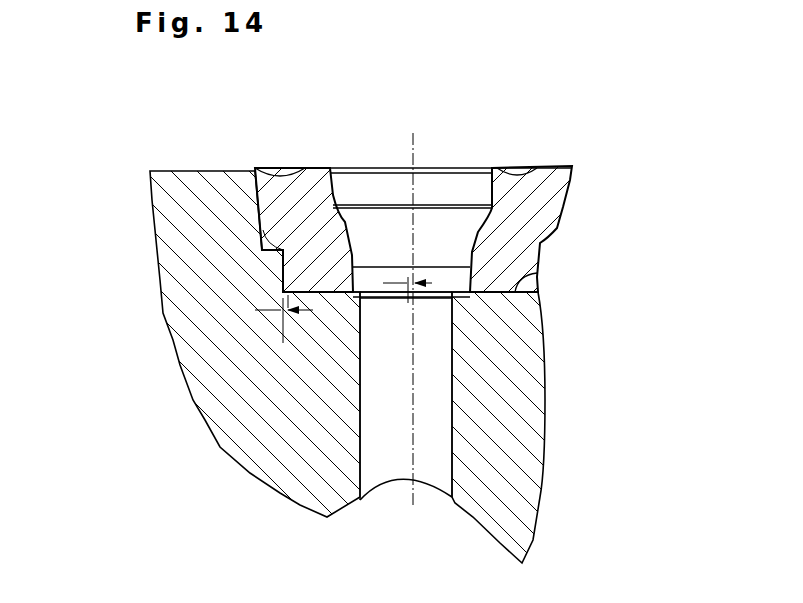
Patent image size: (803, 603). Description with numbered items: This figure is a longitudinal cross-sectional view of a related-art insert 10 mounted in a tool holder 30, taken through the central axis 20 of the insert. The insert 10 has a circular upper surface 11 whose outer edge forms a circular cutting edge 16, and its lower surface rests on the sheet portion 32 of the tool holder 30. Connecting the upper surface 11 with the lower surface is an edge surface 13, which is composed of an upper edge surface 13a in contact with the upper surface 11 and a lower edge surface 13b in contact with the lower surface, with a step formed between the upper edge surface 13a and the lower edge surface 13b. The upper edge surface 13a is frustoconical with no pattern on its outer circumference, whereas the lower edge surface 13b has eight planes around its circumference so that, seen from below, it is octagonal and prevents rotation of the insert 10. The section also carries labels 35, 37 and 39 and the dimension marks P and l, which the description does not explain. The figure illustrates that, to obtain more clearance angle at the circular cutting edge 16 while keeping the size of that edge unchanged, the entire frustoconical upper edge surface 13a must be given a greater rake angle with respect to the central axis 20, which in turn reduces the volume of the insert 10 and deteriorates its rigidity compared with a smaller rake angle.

The insert 10 is at (596, 176).
The upper surface 11 is at (498, 163).
The edge surface 13 is at (566, 237).
The upper edge surface 13a is at (562, 210).
The lower edge surface 13b is at (262, 247).
The circular cutting edge 16 is at (572, 167).
The central axis 20 is at (414, 144).
The tool holder 30 is at (566, 368).
The sheet portion 32 is at (537, 273).
The groove 35 is at (259, 197).
The outer wall surface 37 is at (285, 263).
The bore 39 is at (408, 361).
The offset dimension P is at (284, 328).
The length dimension l is at (414, 288).